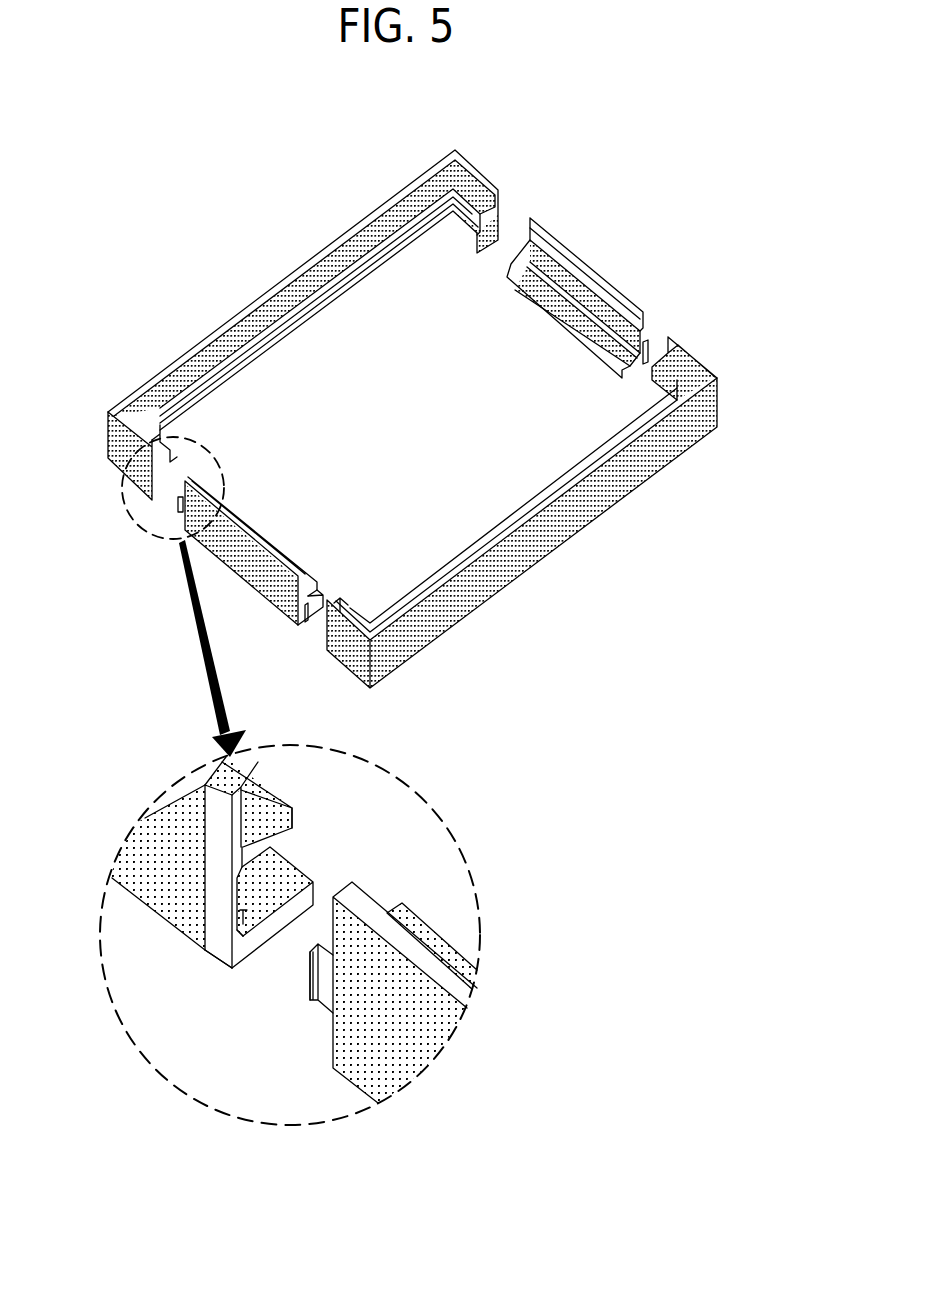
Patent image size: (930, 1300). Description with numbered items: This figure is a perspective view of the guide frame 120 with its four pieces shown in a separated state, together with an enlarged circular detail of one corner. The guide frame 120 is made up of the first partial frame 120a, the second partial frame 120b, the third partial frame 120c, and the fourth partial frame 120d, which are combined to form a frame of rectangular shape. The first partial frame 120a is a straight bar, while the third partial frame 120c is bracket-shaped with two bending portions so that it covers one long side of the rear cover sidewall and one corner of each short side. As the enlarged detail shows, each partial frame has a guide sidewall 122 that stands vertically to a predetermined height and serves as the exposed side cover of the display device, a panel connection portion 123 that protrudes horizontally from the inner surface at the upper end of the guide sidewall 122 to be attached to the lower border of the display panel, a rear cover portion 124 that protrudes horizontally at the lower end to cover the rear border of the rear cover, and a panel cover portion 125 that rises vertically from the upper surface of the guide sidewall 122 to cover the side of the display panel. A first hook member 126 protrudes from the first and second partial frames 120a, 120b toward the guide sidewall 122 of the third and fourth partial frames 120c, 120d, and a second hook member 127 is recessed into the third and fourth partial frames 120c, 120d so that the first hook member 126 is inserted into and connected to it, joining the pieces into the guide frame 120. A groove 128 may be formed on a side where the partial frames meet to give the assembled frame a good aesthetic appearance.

The guide frame 120 is at (160, 207).
The first partial frame 120a is at (289, 526).
The second partial frame 120b is at (624, 262).
The third partial frame 120c is at (299, 250).
The fourth partial frame 120d is at (578, 571).
The guide sidewall 122 is at (243, 913).
The panel connection portion 123 is at (293, 818).
The rear cover portion 124 is at (310, 878).
The panel cover portion 125 is at (238, 812).
The first hook member 126 is at (322, 997).
The second hook member 127 is at (244, 912).
The groove 128 is at (218, 947).